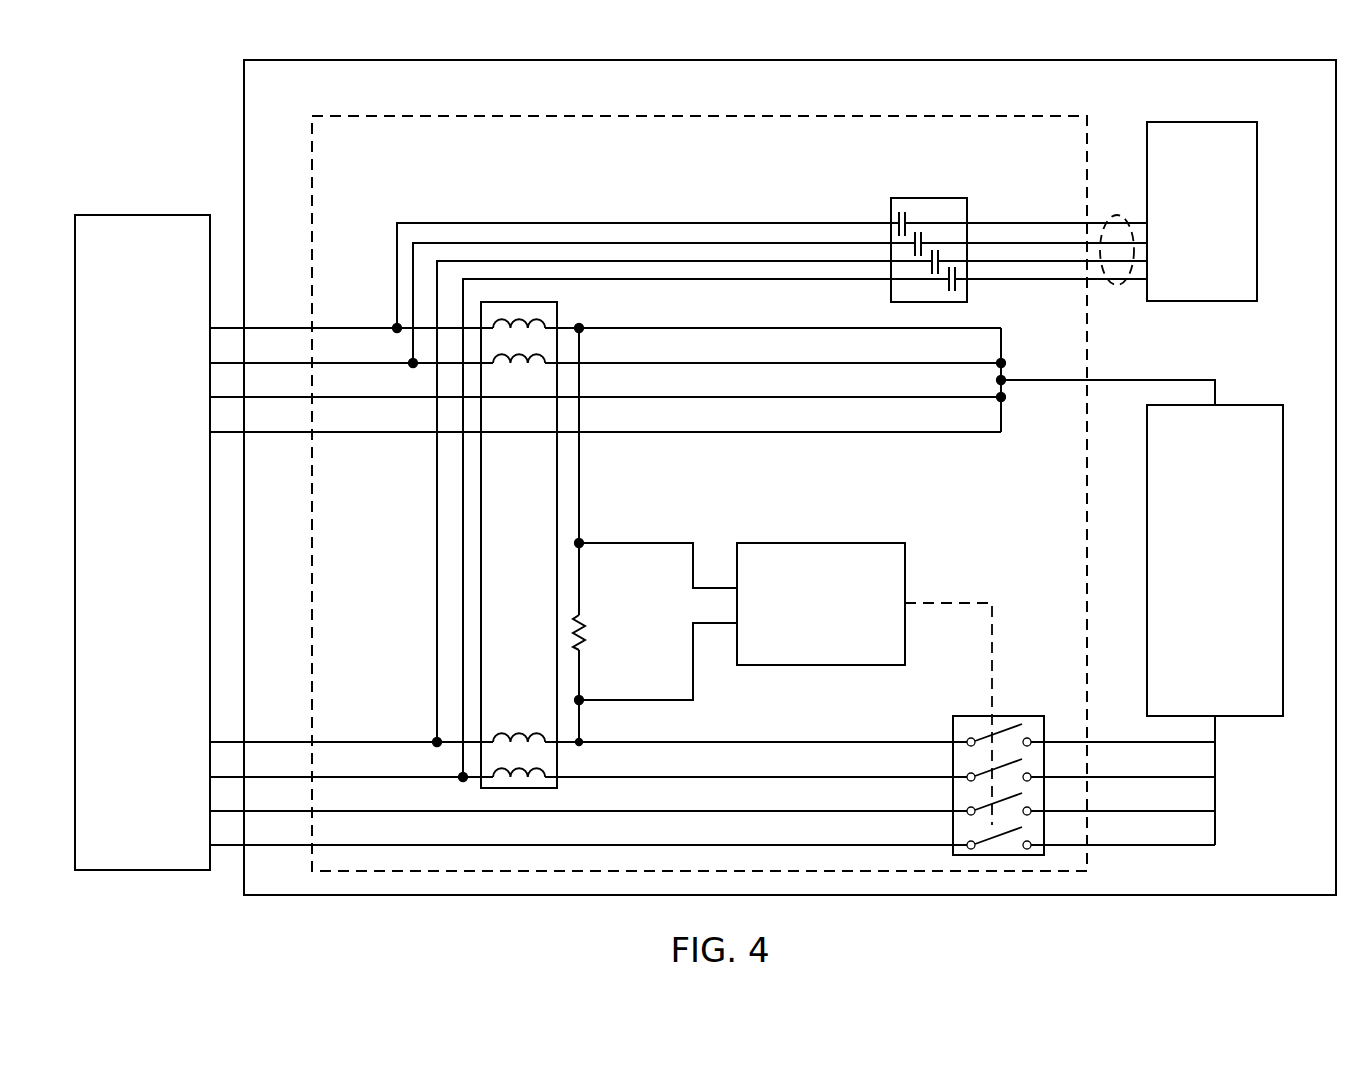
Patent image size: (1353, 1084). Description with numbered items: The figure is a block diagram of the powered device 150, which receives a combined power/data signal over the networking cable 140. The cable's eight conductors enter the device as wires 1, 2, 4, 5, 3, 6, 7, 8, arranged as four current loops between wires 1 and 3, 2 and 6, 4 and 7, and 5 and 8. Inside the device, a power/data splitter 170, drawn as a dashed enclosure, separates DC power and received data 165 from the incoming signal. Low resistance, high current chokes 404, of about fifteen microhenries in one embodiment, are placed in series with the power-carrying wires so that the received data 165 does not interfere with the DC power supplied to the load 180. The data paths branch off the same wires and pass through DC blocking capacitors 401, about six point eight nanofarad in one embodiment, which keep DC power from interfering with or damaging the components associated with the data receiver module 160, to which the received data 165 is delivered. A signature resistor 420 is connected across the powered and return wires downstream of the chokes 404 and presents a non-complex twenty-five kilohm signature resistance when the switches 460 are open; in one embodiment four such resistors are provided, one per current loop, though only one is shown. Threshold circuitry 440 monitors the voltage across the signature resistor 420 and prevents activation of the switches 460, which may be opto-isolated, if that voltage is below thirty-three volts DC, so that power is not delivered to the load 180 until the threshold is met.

The powered device 150 is at (302, 86).
The power/data splitter 170 is at (365, 156).
The networking cable 140 is at (123, 567).
The data receiver module 160 is at (1221, 277).
The received data 165 is at (1139, 183).
The DC blocking capacitors 401 is at (964, 228).
The chokes 404 is at (555, 540).
The signature resistor 420 is at (603, 535).
The threshold circuitry 440 is at (840, 656).
The switches 460 is at (1017, 771).
The load 180 is at (1234, 599).
The wire 1 is at (670, 282).
The wire 2 is at (670, 309).
The wire 3 is at (704, 508).
The wire 4 is at (599, 397).
The wire 5 is at (597, 432).
The wire 6 is at (704, 534).
The wire 7 is at (704, 811).
The wire 8 is at (704, 845).